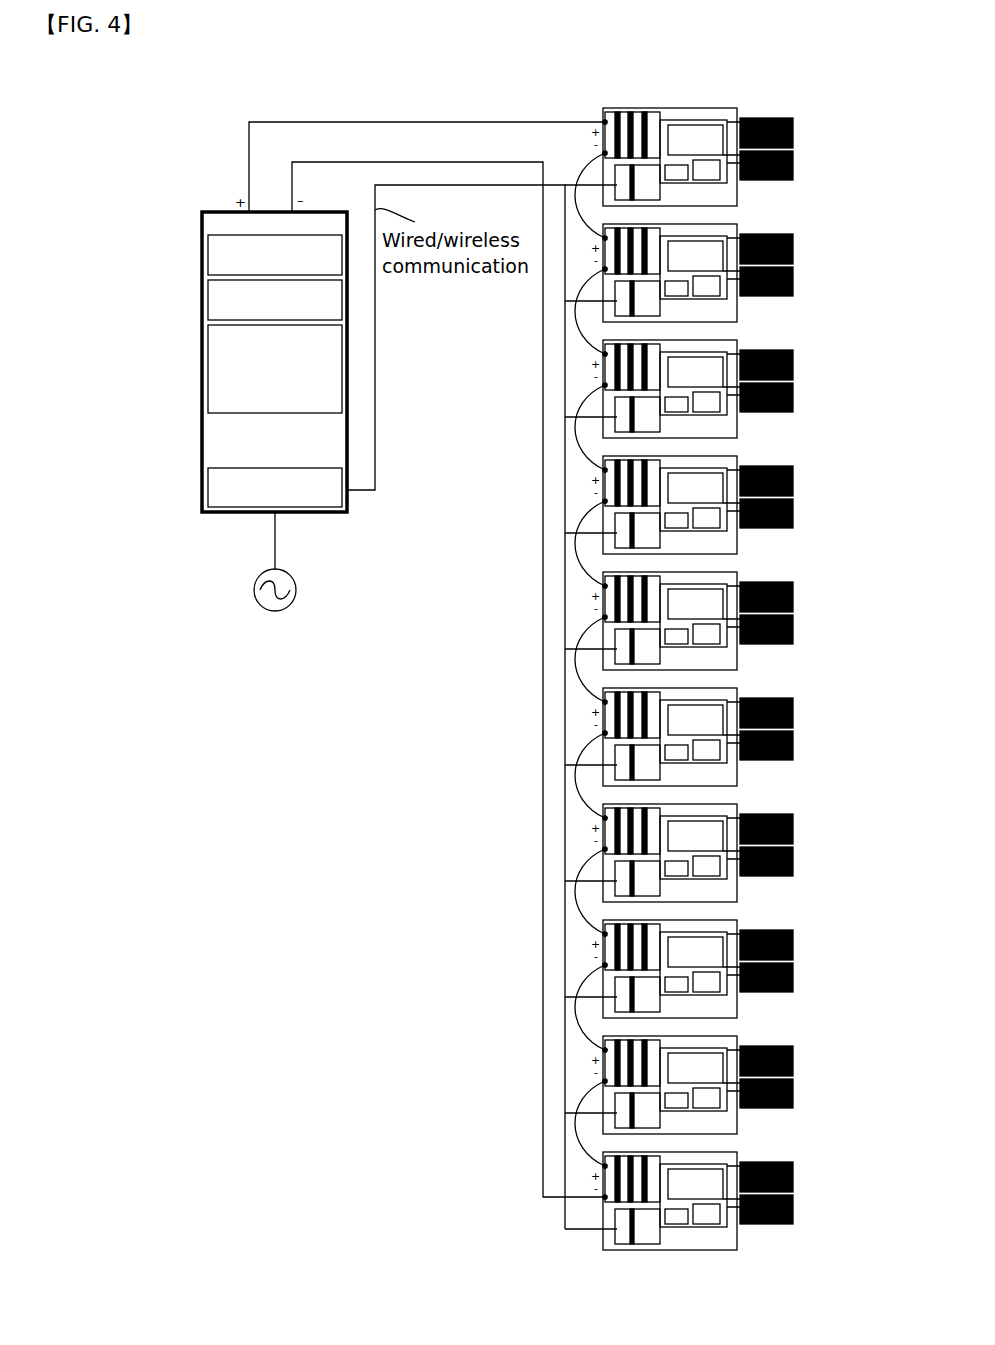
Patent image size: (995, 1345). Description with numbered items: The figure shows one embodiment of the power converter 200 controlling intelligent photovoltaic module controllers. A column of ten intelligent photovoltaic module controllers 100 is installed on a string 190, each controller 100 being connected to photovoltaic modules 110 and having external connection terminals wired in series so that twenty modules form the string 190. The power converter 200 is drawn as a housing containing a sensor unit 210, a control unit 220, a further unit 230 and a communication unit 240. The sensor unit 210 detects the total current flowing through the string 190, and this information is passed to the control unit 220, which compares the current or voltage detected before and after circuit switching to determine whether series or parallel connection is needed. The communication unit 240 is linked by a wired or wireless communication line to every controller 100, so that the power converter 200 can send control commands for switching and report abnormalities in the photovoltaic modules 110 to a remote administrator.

The intelligent photovoltaic module controller 100 is at (613, 1229).
The photovoltaic module 110 is at (760, 1225).
The string 190 is at (543, 632).
The power converter 200 is at (187, 325).
The sensor unit 210 is at (205, 240).
The control unit 220 is at (205, 285).
The control unit 230 is at (205, 330).
The communication unit 240 is at (205, 478).